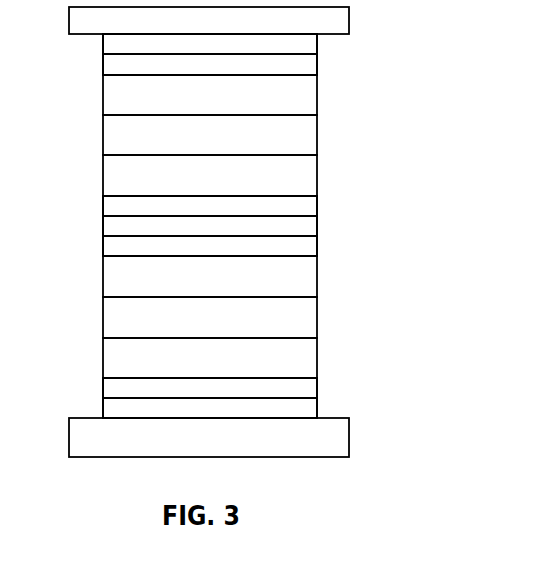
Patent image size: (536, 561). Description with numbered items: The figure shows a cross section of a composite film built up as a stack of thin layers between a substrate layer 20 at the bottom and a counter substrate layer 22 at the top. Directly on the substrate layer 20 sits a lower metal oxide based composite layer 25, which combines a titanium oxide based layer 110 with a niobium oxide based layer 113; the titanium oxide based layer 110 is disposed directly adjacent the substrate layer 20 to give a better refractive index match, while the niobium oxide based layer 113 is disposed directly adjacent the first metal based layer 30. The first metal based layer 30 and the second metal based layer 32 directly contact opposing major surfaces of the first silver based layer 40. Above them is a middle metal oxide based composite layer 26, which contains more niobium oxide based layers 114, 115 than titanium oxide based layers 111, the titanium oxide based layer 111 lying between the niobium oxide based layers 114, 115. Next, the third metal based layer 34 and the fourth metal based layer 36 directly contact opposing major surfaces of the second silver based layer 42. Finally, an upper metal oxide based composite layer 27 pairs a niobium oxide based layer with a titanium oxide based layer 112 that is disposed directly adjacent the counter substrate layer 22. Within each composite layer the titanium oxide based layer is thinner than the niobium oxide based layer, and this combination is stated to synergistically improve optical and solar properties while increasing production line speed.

The substrate layer 20 is at (345, 438).
The counter substrate layer 22 is at (345, 22).
The metal oxide based composite layer 25 is at (317, 398).
The metal oxide based composite layer 26 is at (317, 216).
The metal oxide based composite layer 27 is at (317, 54).
The first metal based layer 30 is at (310, 353).
The second metal based layer 32 is at (310, 272).
The third metal based layer 34 is at (310, 171).
The fourth metal based layer 36 is at (310, 91).
The first silver based layer 40 is at (310, 312).
The second silver based layer 42 is at (310, 131).
The titanium oxide based layer 110 is at (114, 409).
The titanium oxide based layer 111 is at (114, 228).
The titanium oxide based layer 112 is at (114, 46).
The niobium oxide based layer 113 is at (114, 390).
The niobium oxide based layer 114 is at (114, 248).
The niobium oxide based layer 115 is at (114, 208).